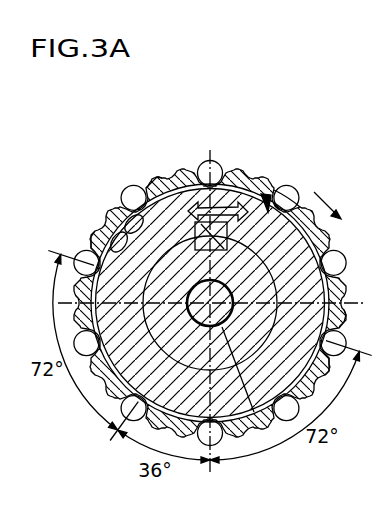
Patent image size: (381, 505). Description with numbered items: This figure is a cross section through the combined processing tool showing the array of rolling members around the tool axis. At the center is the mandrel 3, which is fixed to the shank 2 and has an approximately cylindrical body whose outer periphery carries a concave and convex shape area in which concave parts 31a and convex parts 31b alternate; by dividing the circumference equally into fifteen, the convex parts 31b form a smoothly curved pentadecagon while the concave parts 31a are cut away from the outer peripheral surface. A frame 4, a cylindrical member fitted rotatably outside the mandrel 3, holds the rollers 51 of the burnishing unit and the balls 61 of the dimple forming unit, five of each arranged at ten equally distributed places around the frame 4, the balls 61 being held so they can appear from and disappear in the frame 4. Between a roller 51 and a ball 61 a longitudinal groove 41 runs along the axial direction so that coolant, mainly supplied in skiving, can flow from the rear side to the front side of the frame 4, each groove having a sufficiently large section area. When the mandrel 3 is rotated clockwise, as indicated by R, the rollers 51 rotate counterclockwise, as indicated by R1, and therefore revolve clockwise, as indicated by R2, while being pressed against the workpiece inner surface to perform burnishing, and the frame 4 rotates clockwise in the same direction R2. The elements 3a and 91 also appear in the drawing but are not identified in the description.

The shank 2 is at (335, 342).
The mandrel 3 is at (152, 186).
The cage pocket 3a is at (163, 185).
The frame 4 is at (339, 368).
The concave parts 31a is at (107, 232).
The convex parts 31b is at (121, 203).
The longitudinal groove 41 is at (97, 400).
The rollers 51 is at (130, 186).
The balls 61 is at (204, 160).
The reference line 91 is at (254, 412).
The clockwise rotation of mandrel R is at (237, 176).
The counterclockwise rotation of rollers R1 is at (291, 181).
The clockwise revolution R2 is at (327, 189).